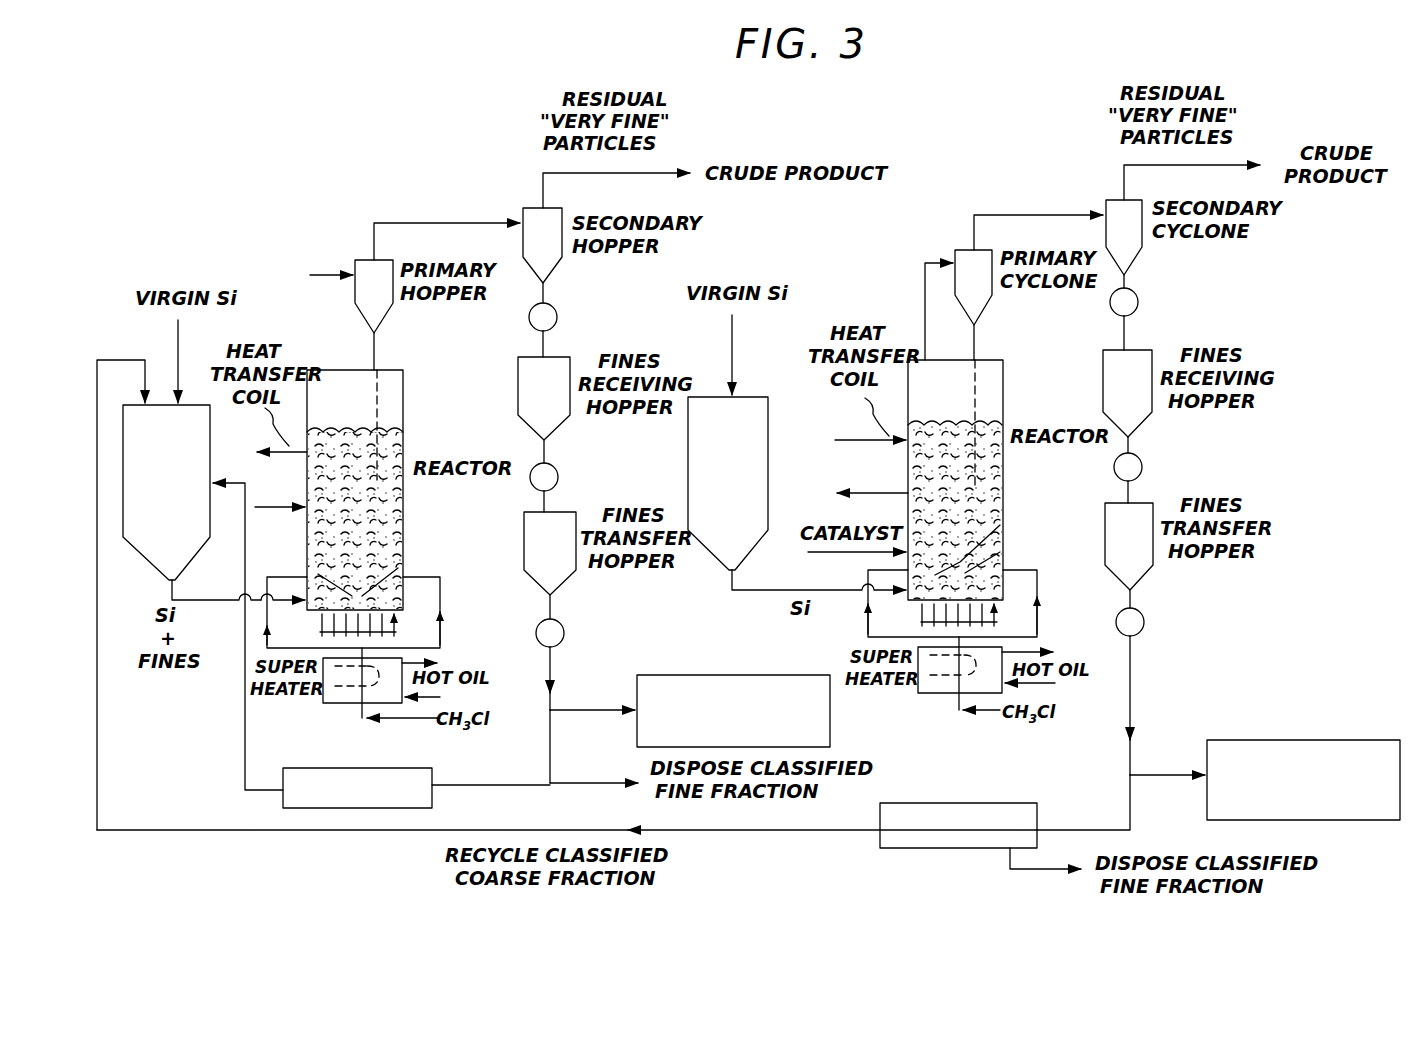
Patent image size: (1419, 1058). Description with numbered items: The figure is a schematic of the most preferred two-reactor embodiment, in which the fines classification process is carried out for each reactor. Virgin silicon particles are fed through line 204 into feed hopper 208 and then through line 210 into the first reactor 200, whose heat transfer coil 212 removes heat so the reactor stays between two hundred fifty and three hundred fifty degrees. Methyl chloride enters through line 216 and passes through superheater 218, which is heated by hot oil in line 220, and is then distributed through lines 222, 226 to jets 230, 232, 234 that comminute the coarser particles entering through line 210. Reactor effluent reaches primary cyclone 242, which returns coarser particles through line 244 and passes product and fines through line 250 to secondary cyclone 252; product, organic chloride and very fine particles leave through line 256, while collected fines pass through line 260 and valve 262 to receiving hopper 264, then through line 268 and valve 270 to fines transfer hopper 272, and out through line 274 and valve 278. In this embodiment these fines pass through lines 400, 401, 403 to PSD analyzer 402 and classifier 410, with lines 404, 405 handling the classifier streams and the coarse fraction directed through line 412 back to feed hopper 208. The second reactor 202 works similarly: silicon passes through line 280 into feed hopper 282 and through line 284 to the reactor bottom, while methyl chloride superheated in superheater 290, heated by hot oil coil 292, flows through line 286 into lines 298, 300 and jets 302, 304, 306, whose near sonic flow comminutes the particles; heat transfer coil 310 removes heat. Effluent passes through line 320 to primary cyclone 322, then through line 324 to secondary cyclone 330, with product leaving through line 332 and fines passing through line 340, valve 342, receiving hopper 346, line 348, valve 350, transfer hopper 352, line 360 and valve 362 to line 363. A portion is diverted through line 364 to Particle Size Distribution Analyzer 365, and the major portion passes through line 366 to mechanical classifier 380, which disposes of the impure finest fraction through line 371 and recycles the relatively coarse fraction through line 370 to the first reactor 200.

The reactor 200 is at (404, 428).
The reactor 202 is at (1004, 390).
The line 204 is at (176, 331).
The feed hopper 208 is at (146, 405).
The line 210 is at (206, 600).
The heat transfer coil 212 is at (302, 507).
The line 216 is at (442, 697).
The superheater 218 is at (323, 705).
The line 220 is at (440, 663).
The line 222 is at (441, 596).
The line 226 is at (272, 612).
The jet 230 is at (326, 620).
The jet 232 is at (318, 574).
The jet 234 is at (398, 568).
The primary cyclone 242 is at (384, 318).
The line 244 is at (376, 348).
The line 250 is at (447, 222).
The secondary cyclone 252 is at (552, 270).
The line 256 is at (657, 170).
The line 260 is at (546, 296).
The valve 262 is at (558, 318).
The receiving hopper 264 is at (518, 384).
The line 268 is at (547, 450).
The valve 270 is at (559, 478).
The fines transfer hopper 272 is at (524, 534).
The line 274 is at (552, 610).
The valve 278 is at (565, 635).
The line 280 is at (735, 336).
The feed hopper 282 is at (764, 394).
The line 284 is at (780, 590).
The line 286 is at (972, 712).
The superheater 290 is at (918, 694).
The hot oil coil 292 is at (1052, 654).
The line 298 is at (868, 640).
The line 300 is at (1038, 590).
The jet 302 is at (924, 614).
The jet 304 is at (1000, 525).
The jet 306 is at (1000, 552).
The heat transfer coil 310 is at (853, 492).
The line 320 is at (925, 291).
The primary cyclone 322 is at (986, 307).
The line 324 is at (1038, 214).
The secondary cyclone 330 is at (1134, 264).
The line 332 is at (1124, 171).
The line 340 is at (1128, 284).
The valve 342 is at (1139, 303).
The receiving hopper 346 is at (1102, 359).
The line 348 is at (1130, 445).
The valve 350 is at (1143, 468).
The transfer hopper 352 is at (1102, 510).
The line 360 is at (1132, 600).
The valve 362 is at (1145, 624).
The line 363 is at (1132, 695).
The line 364 is at (1166, 774).
The Particle Size Distribution Analyzer 365 is at (1340, 820).
The line 366 is at (1132, 807).
The line 370 is at (280, 833).
The line 371 is at (1014, 868).
The mechanical classifier 380 is at (1037, 804).
The fines discharge line 400 is at (552, 676).
The analyzer sample line 401 is at (587, 712).
The PSD analyzer 402 is at (656, 676).
The fines line 403 is at (552, 763).
The classifier feed line 404 is at (500, 787).
The fine fraction disposal line 405 is at (598, 785).
The classifier 410 is at (432, 775).
The line 412 is at (241, 786).